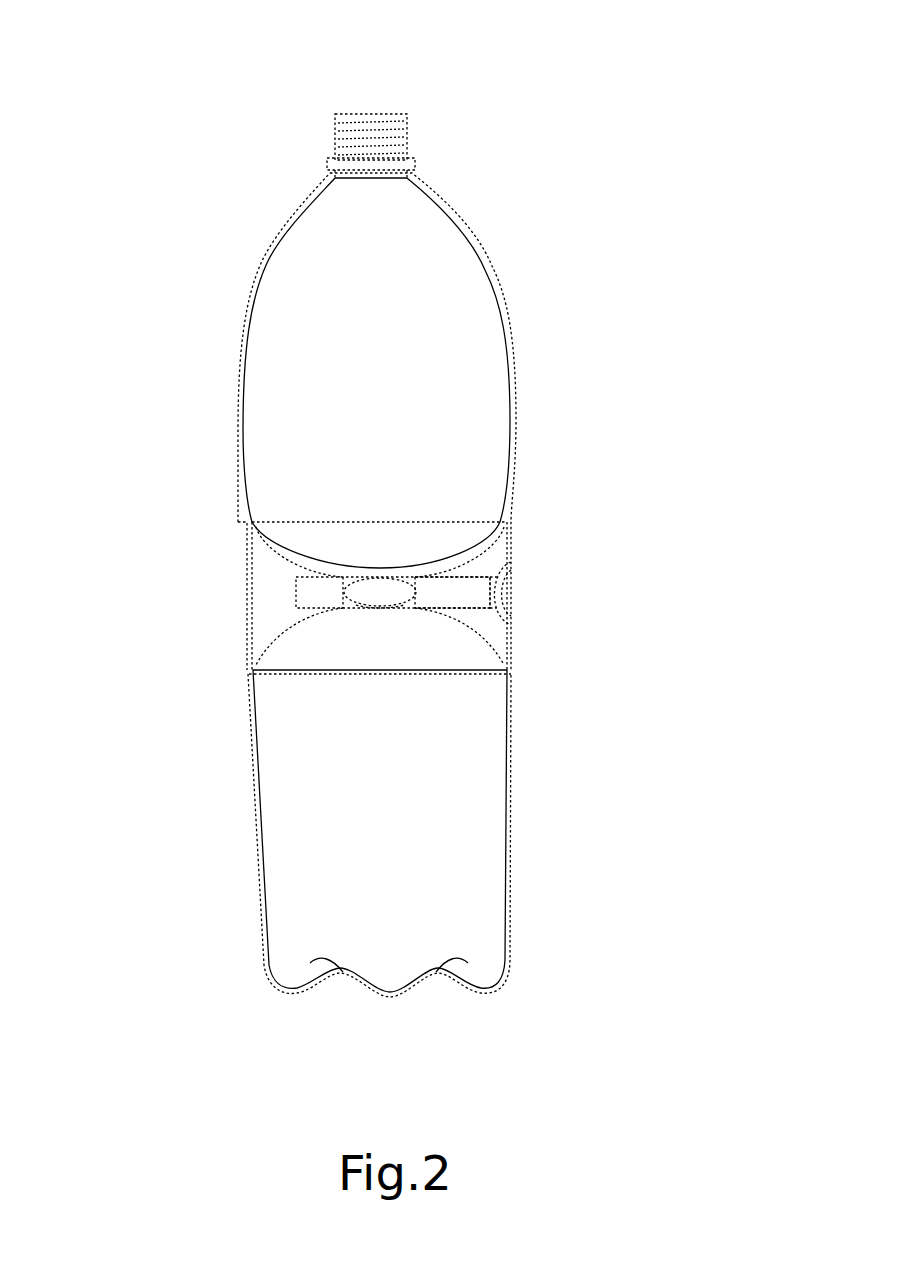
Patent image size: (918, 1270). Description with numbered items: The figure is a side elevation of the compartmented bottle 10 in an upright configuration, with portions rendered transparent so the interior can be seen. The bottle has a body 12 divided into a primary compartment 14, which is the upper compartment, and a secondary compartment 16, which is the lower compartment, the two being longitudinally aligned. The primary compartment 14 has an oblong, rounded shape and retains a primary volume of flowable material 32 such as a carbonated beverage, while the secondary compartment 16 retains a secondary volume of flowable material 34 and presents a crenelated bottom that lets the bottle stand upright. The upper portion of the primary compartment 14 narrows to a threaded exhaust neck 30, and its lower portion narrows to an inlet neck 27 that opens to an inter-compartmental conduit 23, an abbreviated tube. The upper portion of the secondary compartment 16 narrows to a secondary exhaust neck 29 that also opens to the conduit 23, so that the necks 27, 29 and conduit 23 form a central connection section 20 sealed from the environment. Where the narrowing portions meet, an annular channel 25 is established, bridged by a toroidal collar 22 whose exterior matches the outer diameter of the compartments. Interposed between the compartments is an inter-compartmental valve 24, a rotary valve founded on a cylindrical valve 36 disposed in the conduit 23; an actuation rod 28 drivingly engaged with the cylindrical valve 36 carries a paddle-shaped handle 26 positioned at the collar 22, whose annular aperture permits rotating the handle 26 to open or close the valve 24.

The compartmented bottle 10 is at (489, 189).
The body 12 is at (283, 357).
The primary compartment 14 is at (248, 288).
The secondary compartment 16 is at (510, 867).
The central connection section 20 is at (372, 618).
The toroidal collar 22 is at (265, 595).
The inter-compartmental conduit 23 is at (347, 593).
The inter-compartmental valve 24 is at (538, 622).
The annular channel 25 is at (473, 633).
The paddle-shaped handle 26 is at (512, 592).
The neck 27 is at (300, 556).
The actuation rod 28 is at (447, 590).
The secondary exhaust neck 29 is at (293, 623).
The exhaust neck 30 is at (363, 118).
The primary volume of flowable material 32 is at (477, 425).
The secondary volume of flowable material 34 is at (312, 853).
The cylindrical valve 36 is at (397, 603).